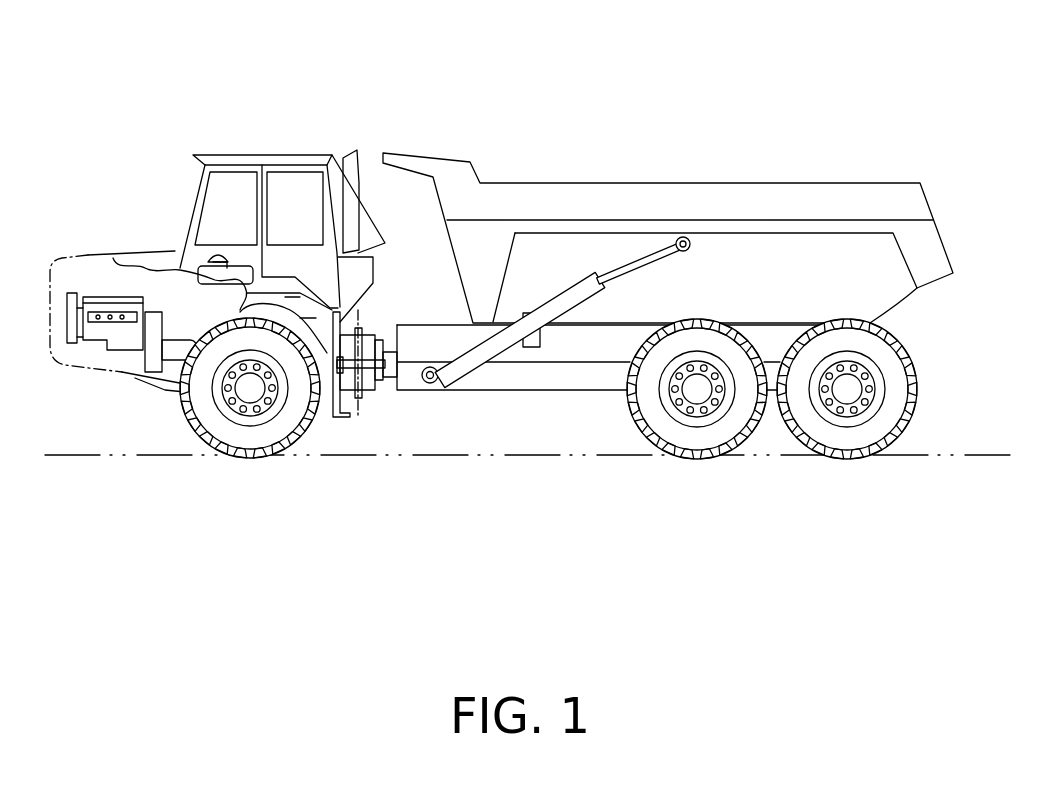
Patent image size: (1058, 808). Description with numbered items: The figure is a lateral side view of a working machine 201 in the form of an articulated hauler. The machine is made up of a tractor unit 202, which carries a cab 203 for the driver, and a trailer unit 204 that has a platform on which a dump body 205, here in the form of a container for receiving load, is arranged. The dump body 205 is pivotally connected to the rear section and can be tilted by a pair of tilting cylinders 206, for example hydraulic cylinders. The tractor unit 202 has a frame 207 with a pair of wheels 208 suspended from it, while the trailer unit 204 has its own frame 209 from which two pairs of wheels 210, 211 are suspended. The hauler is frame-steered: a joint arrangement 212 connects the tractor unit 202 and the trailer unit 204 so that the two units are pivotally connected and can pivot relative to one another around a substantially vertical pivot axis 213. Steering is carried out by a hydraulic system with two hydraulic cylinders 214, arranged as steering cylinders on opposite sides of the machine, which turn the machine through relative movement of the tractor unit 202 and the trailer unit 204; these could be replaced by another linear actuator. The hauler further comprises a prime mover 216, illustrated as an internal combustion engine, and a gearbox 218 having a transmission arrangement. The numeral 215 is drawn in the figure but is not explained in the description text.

The working machine 201 is at (650, 53).
The tractor unit 202 is at (233, 117).
The cab 203 is at (283, 160).
The trailer unit 204 is at (781, 135).
The dump body 205 is at (626, 207).
The tilting cylinders 206 is at (490, 377).
The frame 207 is at (170, 386).
The wheels 208 is at (253, 452).
The frame 209 is at (490, 345).
The wheels 210 is at (695, 438).
The wheels 211 is at (845, 438).
The joint arrangement 212 is at (397, 387).
The pivot axis 213 is at (363, 415).
The hydraulic cylinders 214 is at (400, 380).
The articulation hitch 215 is at (393, 340).
The prime mover 216 is at (107, 307).
The gearbox 218 is at (178, 348).